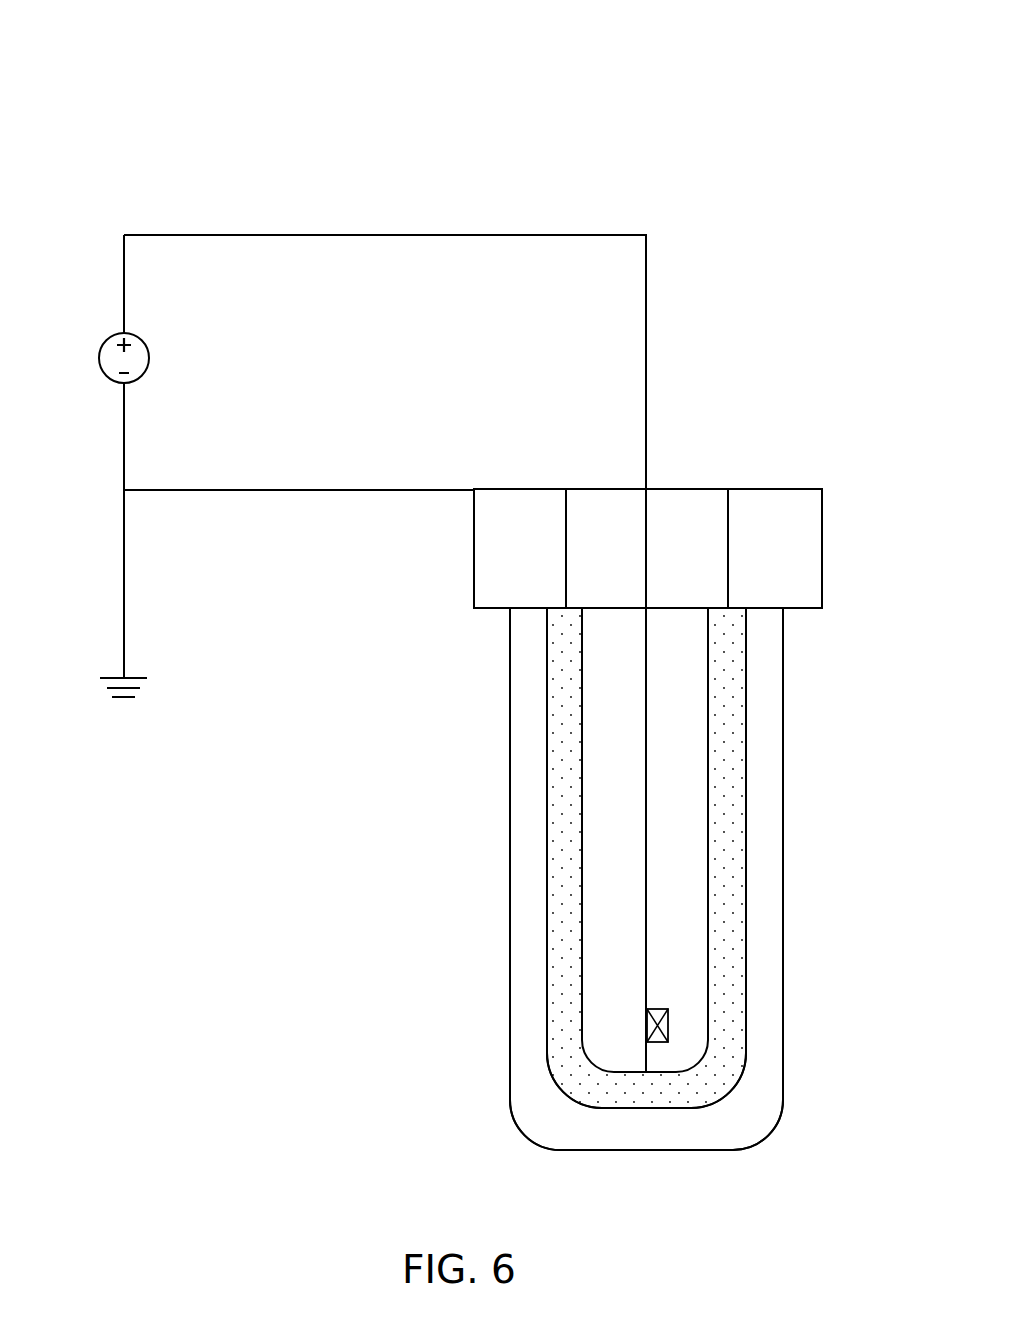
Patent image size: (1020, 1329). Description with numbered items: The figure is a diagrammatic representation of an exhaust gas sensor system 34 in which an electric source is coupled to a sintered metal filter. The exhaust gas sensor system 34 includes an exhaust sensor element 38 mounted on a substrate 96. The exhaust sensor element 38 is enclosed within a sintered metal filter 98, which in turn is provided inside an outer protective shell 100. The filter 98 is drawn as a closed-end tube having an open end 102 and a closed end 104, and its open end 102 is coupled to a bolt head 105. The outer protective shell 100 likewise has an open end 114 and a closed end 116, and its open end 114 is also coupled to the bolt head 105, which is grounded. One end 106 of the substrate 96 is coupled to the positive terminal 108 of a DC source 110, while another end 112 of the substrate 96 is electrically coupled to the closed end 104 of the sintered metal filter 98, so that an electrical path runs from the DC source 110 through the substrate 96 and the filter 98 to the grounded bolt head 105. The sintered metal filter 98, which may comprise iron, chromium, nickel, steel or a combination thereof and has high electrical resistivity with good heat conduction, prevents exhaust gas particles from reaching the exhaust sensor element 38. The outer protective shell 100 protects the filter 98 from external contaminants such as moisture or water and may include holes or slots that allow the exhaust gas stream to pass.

The exhaust gas sensor system 34 is at (148, 76).
The exhaust sensor element 38 is at (660, 1009).
The substrate 96 is at (646, 868).
The sintered metal filter 98 is at (746, 793).
The outer protective shell 100 is at (783, 730).
The open end of the filter 102 is at (746, 620).
The closed end of the filter 104 is at (727, 1085).
The bolt head 105 is at (822, 548).
The one end of the substrate 106 is at (646, 640).
The positive terminal 108 is at (133, 331).
The DC source 110 is at (101, 339).
The another end of the substrate 112 is at (643, 1057).
The open end of the outer protective shell 114 is at (510, 667).
The closed end of the outer protective shell 116 is at (520, 1125).